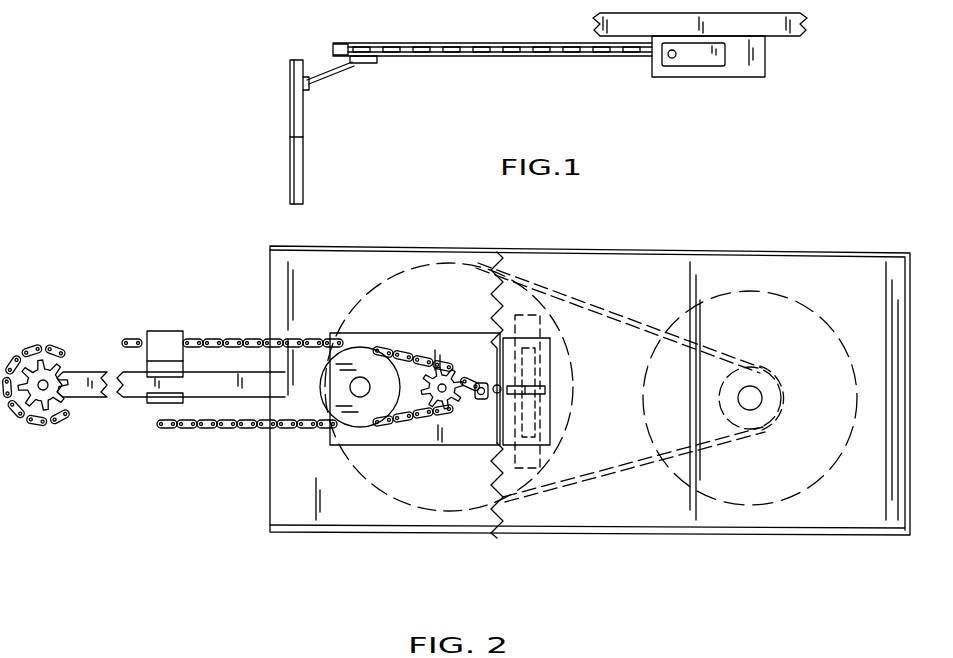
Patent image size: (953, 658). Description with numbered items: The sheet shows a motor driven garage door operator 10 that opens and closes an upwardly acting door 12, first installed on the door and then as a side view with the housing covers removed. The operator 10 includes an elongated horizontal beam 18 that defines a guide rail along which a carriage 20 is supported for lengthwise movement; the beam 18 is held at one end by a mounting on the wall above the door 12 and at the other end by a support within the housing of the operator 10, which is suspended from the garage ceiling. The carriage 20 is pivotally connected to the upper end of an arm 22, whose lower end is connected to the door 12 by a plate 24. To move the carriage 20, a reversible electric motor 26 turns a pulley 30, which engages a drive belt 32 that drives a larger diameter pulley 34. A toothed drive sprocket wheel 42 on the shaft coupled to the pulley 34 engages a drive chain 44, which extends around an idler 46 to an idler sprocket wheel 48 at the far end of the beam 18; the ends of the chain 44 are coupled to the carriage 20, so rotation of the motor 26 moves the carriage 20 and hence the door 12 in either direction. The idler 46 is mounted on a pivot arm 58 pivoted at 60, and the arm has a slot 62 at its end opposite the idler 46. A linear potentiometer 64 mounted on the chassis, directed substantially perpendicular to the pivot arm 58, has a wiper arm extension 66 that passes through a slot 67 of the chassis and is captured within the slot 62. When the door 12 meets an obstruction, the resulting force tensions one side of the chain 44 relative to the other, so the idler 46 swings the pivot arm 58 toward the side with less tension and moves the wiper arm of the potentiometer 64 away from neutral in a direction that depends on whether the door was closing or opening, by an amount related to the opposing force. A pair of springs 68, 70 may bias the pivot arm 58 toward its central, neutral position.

In FIG. 1, the door operator 10 is at (745, 76).
In FIG. 2, the door operator 10 is at (320, 247).
In FIG. 1, the door 12 is at (303, 172).
In FIG. 1, the beam 18 is at (497, 57).
In FIG. 2, the beam 18 is at (235, 385).
In FIG. 1, the carriage 20 is at (372, 63).
In FIG. 2, the carriage 20 is at (164, 331).
In FIG. 1, the arm 22 is at (333, 75).
In FIG. 1, the plate 24 is at (308, 82).
In FIG. 2, the electric motor 26 is at (746, 290).
In FIG. 2, the pulley 30 is at (768, 372).
In FIG. 2, the drive belt 32 is at (560, 265).
In FIG. 2, the pulley 34 is at (461, 262).
In FIG. 2, the drive sprocket wheel 42 is at (440, 368).
In FIG. 1, the drive chain 44 is at (546, 57).
In FIG. 2, the drive chain 44 is at (200, 343).
In FIG. 2, the idler 46 is at (330, 393).
In FIG. 2, the idler sprocket wheel 48 is at (60, 372).
In FIG. 2, the pivot arm 58 is at (410, 447).
In FIG. 2, the pivot 60 is at (470, 435).
In FIG. 2, the slot 62 is at (552, 380).
In FIG. 2, the linear potentiometer 64 is at (550, 323).
In FIG. 2, the extension 66 is at (532, 390).
In FIG. 2, the slot 67 is at (533, 420).
In FIG. 2, the spring 68 is at (497, 300).
In FIG. 2, the spring 70 is at (505, 500).